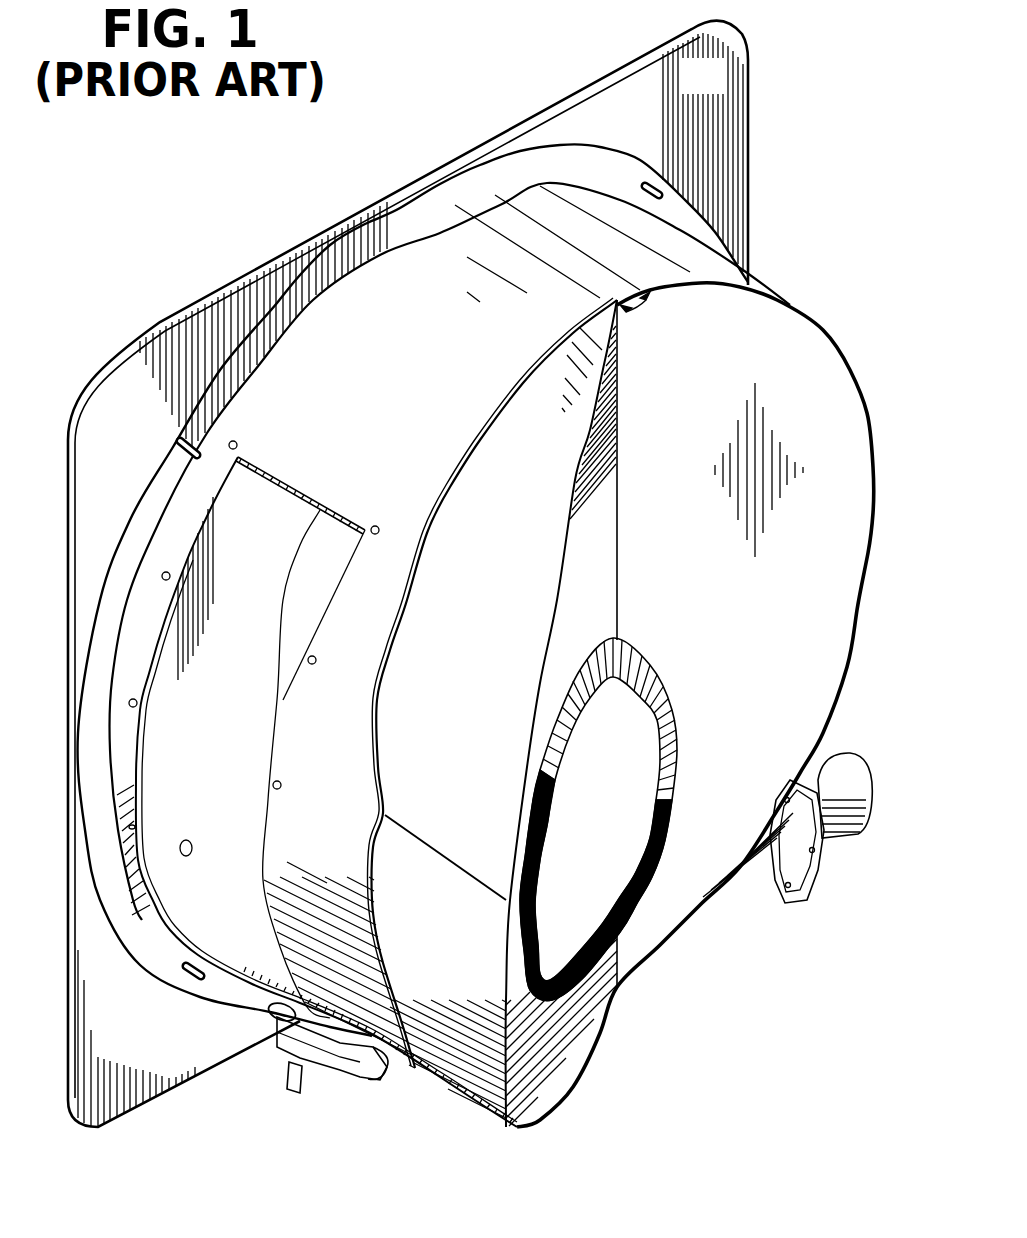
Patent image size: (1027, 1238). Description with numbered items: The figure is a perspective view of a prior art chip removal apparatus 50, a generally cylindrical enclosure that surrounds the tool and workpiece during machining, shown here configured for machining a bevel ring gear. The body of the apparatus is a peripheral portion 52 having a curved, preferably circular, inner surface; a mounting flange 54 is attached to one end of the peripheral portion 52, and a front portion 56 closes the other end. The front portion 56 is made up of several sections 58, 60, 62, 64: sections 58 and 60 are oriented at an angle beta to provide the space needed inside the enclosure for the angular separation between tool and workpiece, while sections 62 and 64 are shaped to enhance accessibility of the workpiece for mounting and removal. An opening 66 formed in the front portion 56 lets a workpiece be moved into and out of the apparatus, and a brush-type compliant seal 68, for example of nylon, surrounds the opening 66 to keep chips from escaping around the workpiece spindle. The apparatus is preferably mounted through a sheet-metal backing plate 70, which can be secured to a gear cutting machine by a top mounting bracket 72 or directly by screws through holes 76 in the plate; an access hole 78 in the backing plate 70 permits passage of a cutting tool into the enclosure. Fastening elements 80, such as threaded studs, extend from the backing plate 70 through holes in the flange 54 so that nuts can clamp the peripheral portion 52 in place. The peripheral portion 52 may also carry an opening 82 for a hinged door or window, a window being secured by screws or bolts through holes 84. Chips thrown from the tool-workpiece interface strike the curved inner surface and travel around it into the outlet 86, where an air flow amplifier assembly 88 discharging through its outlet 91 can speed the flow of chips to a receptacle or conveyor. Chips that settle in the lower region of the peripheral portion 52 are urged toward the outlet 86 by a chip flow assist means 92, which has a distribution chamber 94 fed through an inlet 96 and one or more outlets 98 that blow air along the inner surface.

The chip removal apparatus 50 is at (786, 270).
The peripheral portion 52 is at (428, 280).
The mounting flange 54 is at (288, 298).
The front portion 56 is at (661, 992).
The section 58 is at (779, 377).
The section 60 is at (606, 598).
The section 62 is at (508, 495).
The section 64 is at (446, 905).
The opening 66 is at (622, 785).
The brush-type compliant seal 68 is at (664, 682).
The backing plate 70 is at (719, 90).
The top mounting bracket 72 is at (660, 190).
The holes 76 is at (192, 840).
The access hole 78 is at (334, 575).
The fastening elements 80 is at (190, 980).
The opening 82 is at (280, 478).
The holes 84 is at (316, 655).
The outlet 86 is at (726, 905).
The air flow amplifier assembly 88 is at (784, 906).
The outlet 91 is at (838, 760).
The chip flow assist means 92 is at (323, 1096).
The distribution chamber 94 is at (286, 1040).
The inlet 96 is at (295, 1088).
The outlets 98 is at (272, 1015).